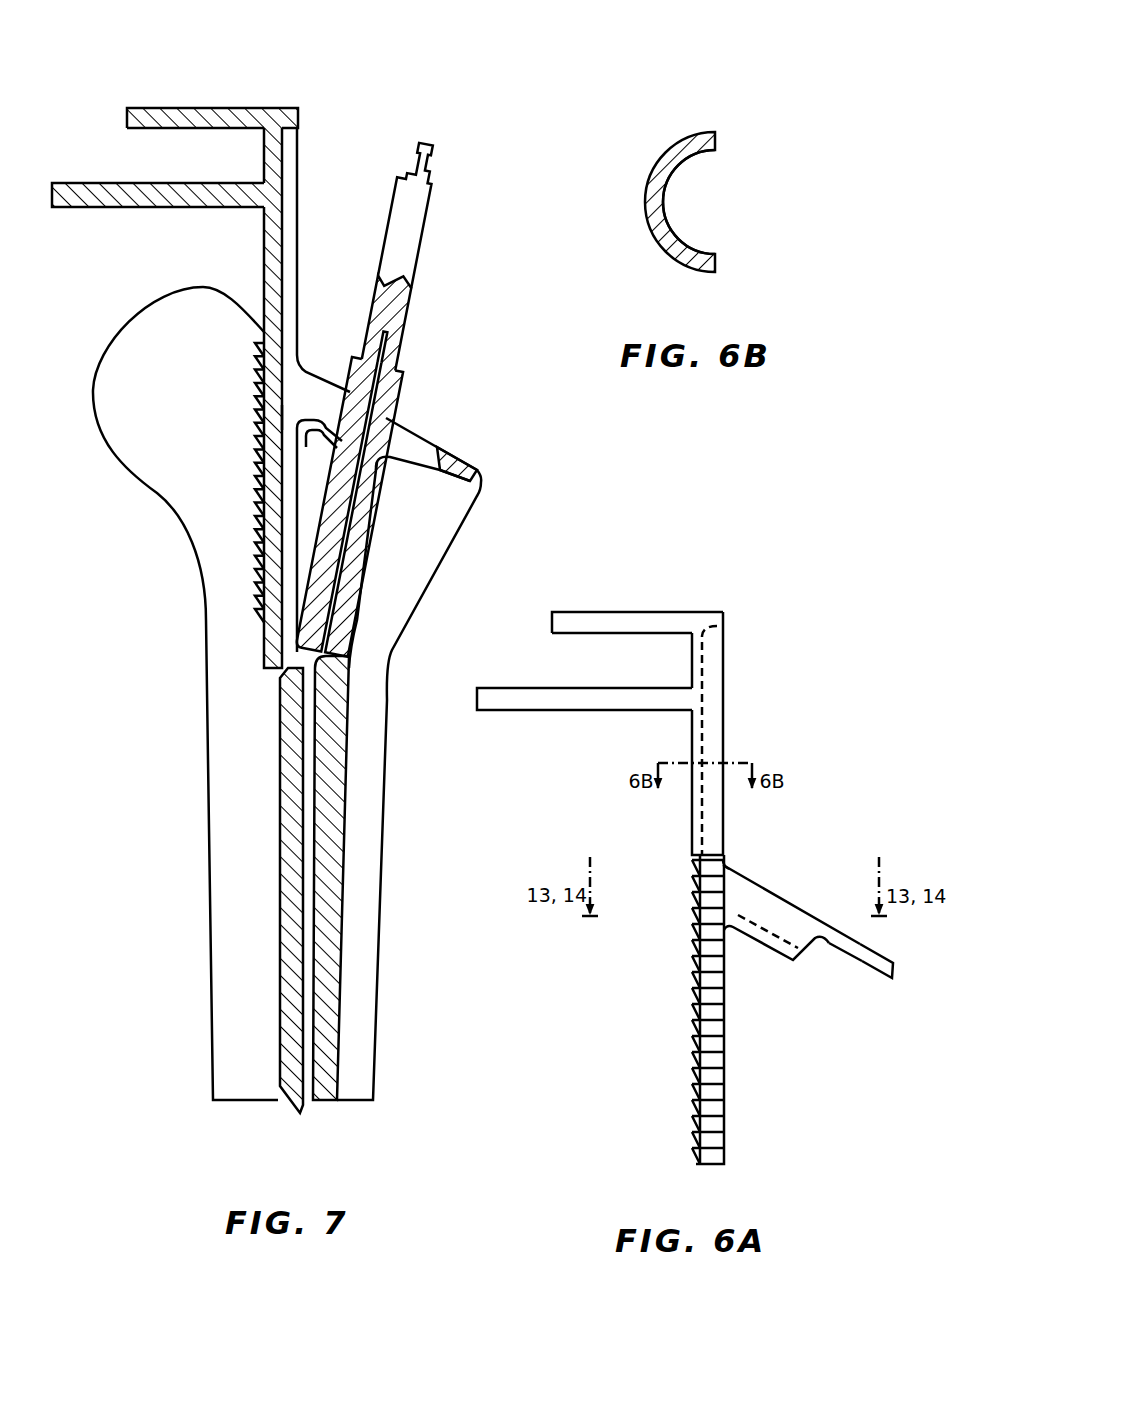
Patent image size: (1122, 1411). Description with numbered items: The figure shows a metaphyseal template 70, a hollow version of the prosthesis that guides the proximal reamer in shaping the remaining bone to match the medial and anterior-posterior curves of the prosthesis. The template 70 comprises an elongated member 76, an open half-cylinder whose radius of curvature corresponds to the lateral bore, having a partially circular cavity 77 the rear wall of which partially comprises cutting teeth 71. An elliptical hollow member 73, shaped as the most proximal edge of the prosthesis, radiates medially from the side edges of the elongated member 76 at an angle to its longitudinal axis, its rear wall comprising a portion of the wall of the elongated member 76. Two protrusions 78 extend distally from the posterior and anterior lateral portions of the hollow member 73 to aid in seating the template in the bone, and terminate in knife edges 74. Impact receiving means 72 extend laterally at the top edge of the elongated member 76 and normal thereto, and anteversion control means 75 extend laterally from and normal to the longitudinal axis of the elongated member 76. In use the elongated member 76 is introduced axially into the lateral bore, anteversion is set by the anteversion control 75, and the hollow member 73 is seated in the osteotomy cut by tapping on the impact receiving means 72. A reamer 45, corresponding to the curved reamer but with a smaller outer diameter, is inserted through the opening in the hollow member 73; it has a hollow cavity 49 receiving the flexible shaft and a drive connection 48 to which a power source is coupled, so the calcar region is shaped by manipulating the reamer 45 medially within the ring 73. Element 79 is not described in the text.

In FIG. 7, the reamer 45 is at (365, 555).
In FIG. 7, the drive connection 48 is at (436, 173).
In FIG. 7, the hollow cavity 49 is at (381, 348).
In FIG. 6A, the metaphyseal template 70 is at (794, 650).
In FIG. 7, the cutting teeth 71 is at (263, 465).
In FIG. 6A, the cutting teeth 71 is at (704, 826).
In FIG. 7, the impact receiving means 72 is at (267, 108).
In FIG. 6A, the impact receiving means 72 is at (648, 625).
In FIG. 7, the elliptical hollow member 73 is at (479, 458).
In FIG. 6A, the elliptical hollow member 73 is at (873, 957).
In FIG. 7, the knife edges 74 is at (319, 432).
In FIG. 6A, the knife edges 74 is at (783, 952).
In FIG. 7, the anteversion control means 75 is at (143, 217).
In FIG. 6A, the anteversion control means 75 is at (592, 705).
In FIG. 6A, the elongated member 76 is at (686, 1040).
In FIG. 6B, the elongated member 76 is at (670, 162).
In FIG. 6B, the partially circular cavity 77 is at (683, 215).
In FIG. 7, the protrusions 78 is at (303, 396).
In FIG. 6A, the protrusions 78 is at (800, 922).
In FIG. 7, the junction 79 is at (283, 417).
In FIG. 6A, the junction 79 is at (724, 868).